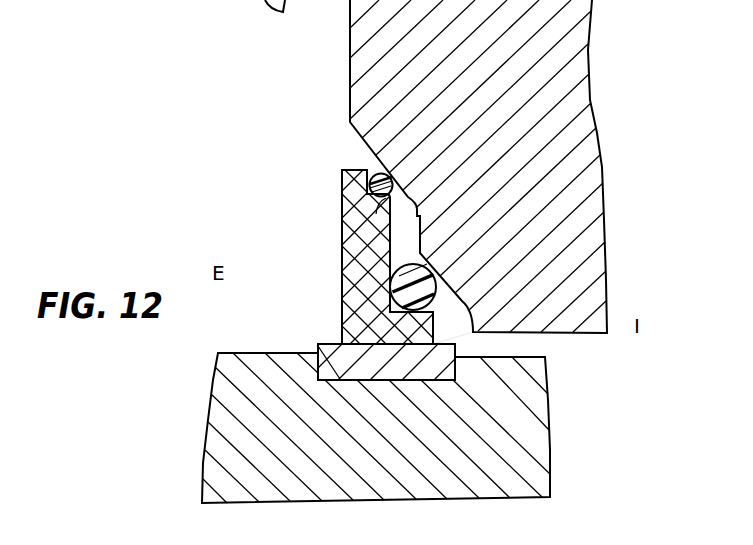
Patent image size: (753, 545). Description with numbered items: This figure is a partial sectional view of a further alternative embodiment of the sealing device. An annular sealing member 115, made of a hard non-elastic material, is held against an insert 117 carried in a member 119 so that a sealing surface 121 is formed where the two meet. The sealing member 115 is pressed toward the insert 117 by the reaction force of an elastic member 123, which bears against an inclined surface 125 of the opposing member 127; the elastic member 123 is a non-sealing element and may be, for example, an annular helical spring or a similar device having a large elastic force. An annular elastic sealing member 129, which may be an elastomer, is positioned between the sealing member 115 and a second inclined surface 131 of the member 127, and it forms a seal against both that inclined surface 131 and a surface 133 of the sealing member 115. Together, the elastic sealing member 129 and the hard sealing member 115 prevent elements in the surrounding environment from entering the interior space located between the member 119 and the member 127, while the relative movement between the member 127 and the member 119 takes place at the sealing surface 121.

The annular sealing member 115 is at (340, 270).
The insert 117 is at (320, 344).
The member 119 is at (549, 438).
The sealing surface 121 is at (340, 343).
The elastic member 123 is at (473, 328).
The inclined surface 125 is at (460, 296).
The member 127 is at (591, 50).
The annular elastic sealing member 129 is at (374, 173).
The inclined surface 131 is at (371, 160).
The surface 133 is at (343, 233).